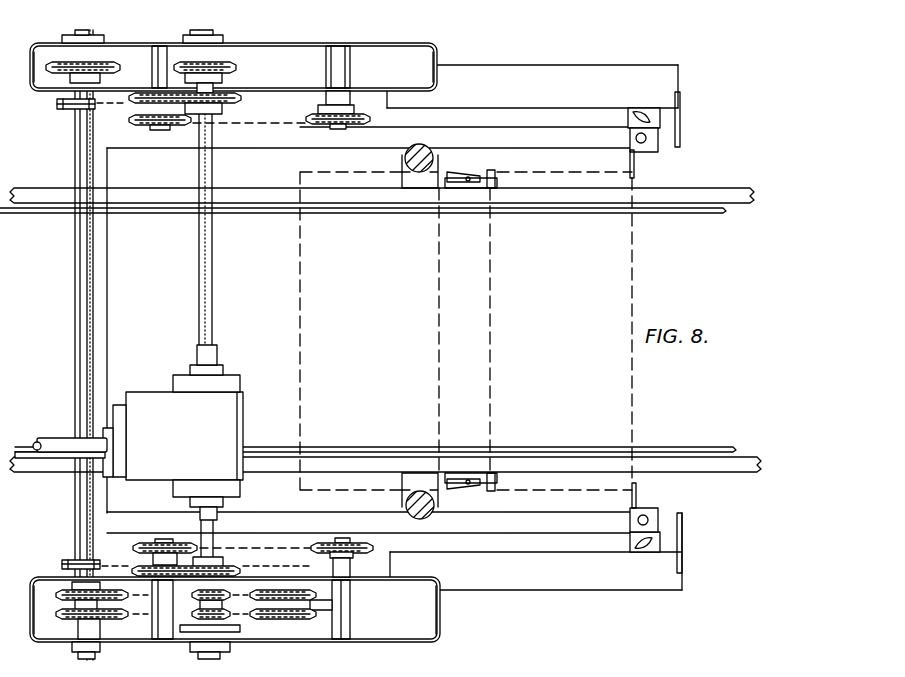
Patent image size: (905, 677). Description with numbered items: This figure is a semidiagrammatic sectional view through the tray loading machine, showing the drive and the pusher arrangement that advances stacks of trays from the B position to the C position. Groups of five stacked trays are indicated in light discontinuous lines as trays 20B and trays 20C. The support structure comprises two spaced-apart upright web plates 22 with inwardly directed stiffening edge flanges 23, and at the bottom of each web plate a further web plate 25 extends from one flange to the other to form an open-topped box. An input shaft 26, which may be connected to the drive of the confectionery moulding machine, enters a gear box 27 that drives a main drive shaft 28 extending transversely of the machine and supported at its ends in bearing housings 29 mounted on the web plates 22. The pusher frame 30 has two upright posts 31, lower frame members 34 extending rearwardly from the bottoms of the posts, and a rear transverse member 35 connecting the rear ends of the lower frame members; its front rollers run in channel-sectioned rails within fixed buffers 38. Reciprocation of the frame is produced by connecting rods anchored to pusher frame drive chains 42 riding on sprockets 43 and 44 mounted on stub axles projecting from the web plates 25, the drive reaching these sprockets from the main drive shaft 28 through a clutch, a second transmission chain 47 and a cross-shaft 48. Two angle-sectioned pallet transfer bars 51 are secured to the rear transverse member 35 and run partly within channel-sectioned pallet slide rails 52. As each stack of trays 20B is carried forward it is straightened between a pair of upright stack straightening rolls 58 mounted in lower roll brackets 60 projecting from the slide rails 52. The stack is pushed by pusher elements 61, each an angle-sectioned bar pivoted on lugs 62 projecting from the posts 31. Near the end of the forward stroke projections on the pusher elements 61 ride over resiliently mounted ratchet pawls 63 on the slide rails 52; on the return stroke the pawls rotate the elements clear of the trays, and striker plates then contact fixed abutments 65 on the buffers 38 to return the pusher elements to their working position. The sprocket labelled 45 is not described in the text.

The trays in the B position 20B is at (561, 331).
The trays in the C position 20C is at (369, 331).
The web plate 22 is at (373, 43).
The edge flange 23 is at (30, 56).
The web plate 25 is at (257, 75).
The input shaft 26 is at (50, 437).
The gear box 27 is at (173, 432).
The main drive shaft 28 is at (212, 305).
The bearing housing 29 is at (190, 37).
The pusher frame 30 is at (560, 120).
The upright post 31 is at (643, 118).
The lower frame member 34 is at (505, 138).
The rear transverse member 35 is at (98, 305).
The buffer 38 is at (603, 75).
The pusher frame drive chain 42 is at (118, 106).
The sprocket 43 is at (60, 110).
The sprocket 44 is at (235, 100).
The sprocket 45 is at (238, 597).
The second transmission chain 47 is at (138, 615).
The cross-shaft 48 is at (87, 248).
The pallet transfer bar 51 is at (715, 215).
The pallet slide rail 52 is at (698, 190).
The stack straightening roll 58 is at (430, 152).
The lower roll bracket 60 is at (440, 162).
The pusher element 61 is at (634, 165).
The lug 62 is at (657, 138).
The ratchet pawl 63 is at (453, 188).
The fixed abutment 65 is at (681, 120).